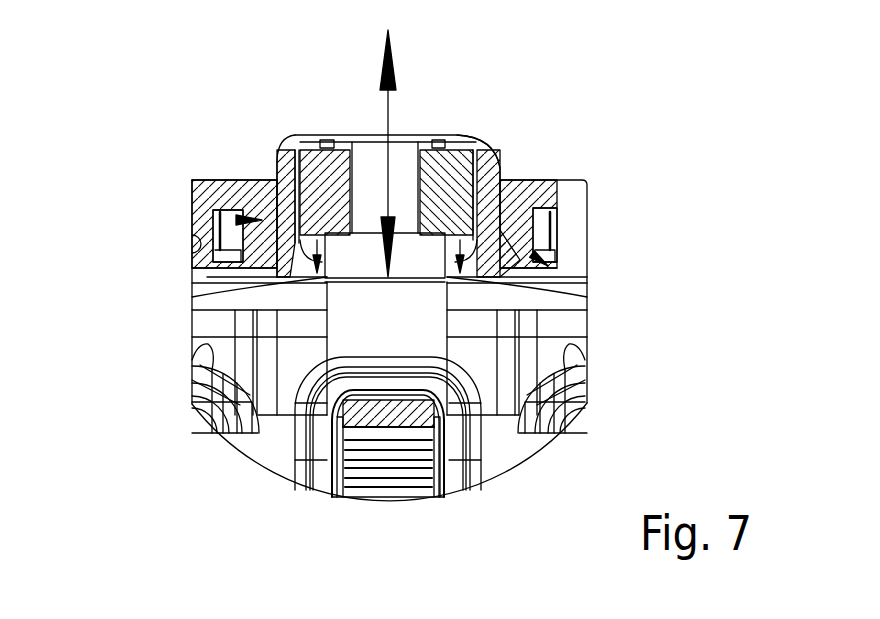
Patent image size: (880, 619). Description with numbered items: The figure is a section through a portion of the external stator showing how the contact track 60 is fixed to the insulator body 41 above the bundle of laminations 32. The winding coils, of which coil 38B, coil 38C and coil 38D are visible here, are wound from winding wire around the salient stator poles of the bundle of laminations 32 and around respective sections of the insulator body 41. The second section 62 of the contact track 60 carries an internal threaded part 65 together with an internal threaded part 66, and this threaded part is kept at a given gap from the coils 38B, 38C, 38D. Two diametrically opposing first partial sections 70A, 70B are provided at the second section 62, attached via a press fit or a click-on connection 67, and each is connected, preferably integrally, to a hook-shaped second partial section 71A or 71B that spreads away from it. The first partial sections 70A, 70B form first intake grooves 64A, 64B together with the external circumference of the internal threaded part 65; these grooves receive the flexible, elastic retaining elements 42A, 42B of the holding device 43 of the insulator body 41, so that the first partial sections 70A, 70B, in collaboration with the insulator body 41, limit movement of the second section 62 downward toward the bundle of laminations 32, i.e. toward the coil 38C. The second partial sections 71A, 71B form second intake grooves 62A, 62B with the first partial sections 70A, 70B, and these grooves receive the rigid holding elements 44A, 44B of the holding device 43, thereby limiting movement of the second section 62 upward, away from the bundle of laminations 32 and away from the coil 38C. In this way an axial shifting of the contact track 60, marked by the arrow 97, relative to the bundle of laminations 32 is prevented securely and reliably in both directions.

The bundle of laminations 32 is at (397, 465).
The coil 38B is at (192, 350).
The coil 38C is at (297, 452).
The coil 38D is at (562, 381).
The insulator body 41 is at (560, 327).
The elastic retaining element 42A is at (290, 178).
The elastic retaining element 42B is at (482, 153).
The holding device 43 is at (200, 192).
The rigid holding element 44A is at (215, 265).
The rigid holding element 44B is at (521, 228).
The contact track 60 is at (485, 130).
The second section 62 is at (458, 135).
The second intake groove 62A is at (236, 220).
The second intake groove 62B is at (533, 255).
The first intake groove 64A is at (192, 297).
The first intake groove 64B is at (500, 287).
The internal threaded part 65 is at (332, 175).
The internal threaded part 66 is at (360, 176).
The click-on connection 67 is at (433, 137).
The first partial section 70A is at (297, 175).
The first partial section 70B is at (503, 138).
The second partial section 71A is at (218, 226).
The second partial section 71B is at (557, 237).
The arrow 97 is at (389, 153).